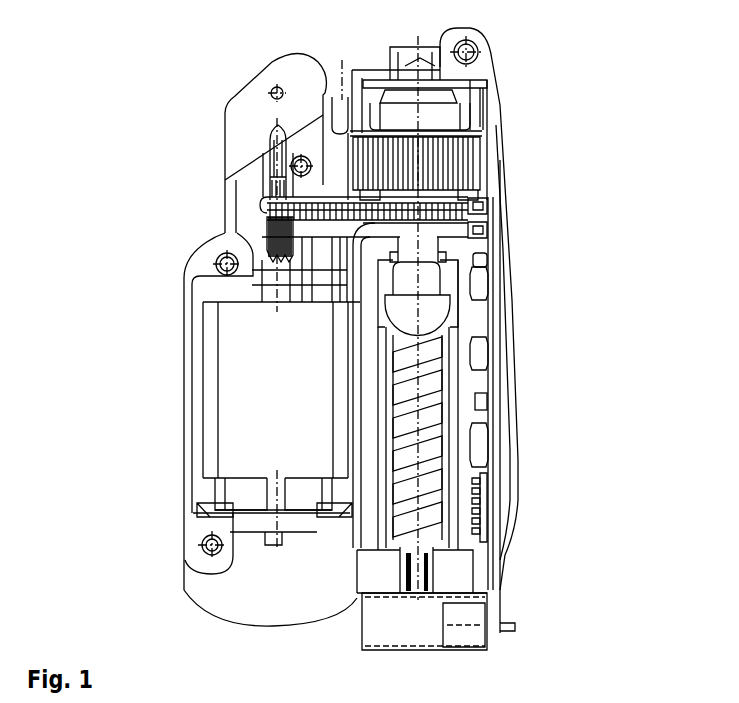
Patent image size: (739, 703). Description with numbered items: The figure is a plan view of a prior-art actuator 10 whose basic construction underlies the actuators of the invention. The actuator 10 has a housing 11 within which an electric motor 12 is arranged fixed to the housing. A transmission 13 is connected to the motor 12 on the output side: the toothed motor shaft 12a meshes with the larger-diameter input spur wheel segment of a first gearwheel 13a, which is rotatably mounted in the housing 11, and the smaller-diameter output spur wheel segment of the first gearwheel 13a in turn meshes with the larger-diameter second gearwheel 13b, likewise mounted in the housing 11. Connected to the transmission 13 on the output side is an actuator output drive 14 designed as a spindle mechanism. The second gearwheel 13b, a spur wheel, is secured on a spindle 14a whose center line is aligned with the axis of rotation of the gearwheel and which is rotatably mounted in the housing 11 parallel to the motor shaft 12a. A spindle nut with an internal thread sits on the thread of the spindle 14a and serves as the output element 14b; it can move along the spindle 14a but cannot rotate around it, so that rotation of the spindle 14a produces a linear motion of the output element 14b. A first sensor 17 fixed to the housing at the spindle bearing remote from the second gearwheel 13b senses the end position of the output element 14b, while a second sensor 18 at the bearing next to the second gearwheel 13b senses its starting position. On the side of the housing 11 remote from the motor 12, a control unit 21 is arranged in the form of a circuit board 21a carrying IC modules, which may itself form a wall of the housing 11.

The actuator 10 is at (235, 80).
The housing 11 is at (277, 597).
The electric motor 12 is at (257, 398).
The motor shaft 12a is at (277, 268).
The transmission 13 is at (317, 143).
The first gearwheel 13a is at (325, 218).
The second gearwheel 13b is at (427, 167).
The actuator output drive 14 is at (467, 337).
The spindle 14a is at (427, 402).
The output element 14b is at (418, 317).
The first sensor 17 is at (463, 537).
The second sensor 18 is at (480, 253).
The control unit 21 is at (502, 589).
The circuit board 21a is at (492, 458).